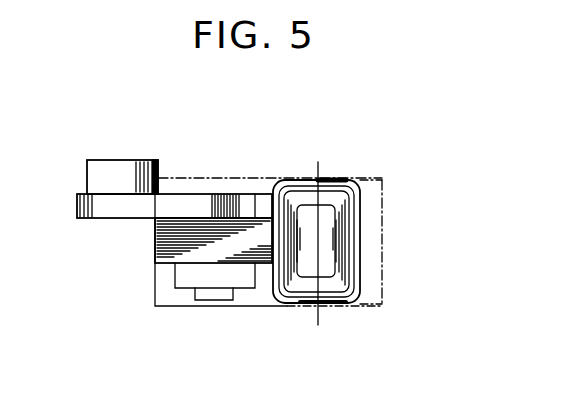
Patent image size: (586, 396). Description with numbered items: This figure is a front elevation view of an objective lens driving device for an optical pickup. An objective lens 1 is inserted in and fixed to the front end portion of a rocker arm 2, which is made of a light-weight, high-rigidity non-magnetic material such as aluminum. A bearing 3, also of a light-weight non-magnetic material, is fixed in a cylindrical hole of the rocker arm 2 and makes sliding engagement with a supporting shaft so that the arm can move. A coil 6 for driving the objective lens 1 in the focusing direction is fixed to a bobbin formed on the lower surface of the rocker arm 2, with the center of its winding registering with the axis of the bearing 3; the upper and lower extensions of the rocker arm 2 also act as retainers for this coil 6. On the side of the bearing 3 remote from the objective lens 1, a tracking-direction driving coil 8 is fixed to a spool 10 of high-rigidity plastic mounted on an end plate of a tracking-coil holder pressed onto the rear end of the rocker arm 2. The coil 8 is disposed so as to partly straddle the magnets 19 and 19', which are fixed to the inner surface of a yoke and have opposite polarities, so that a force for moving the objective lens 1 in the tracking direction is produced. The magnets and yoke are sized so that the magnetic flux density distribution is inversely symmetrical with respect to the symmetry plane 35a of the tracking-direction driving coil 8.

The objective lens 1 is at (123, 168).
The rocker arm 2 is at (95, 219).
The bearing 3 is at (220, 296).
The coil 6 is at (157, 243).
The coil 8 is at (344, 180).
The spool 10 is at (332, 277).
The magnet 19 is at (270, 151).
The magnet 19' is at (403, 242).
The symmetry plane 35a is at (319, 169).